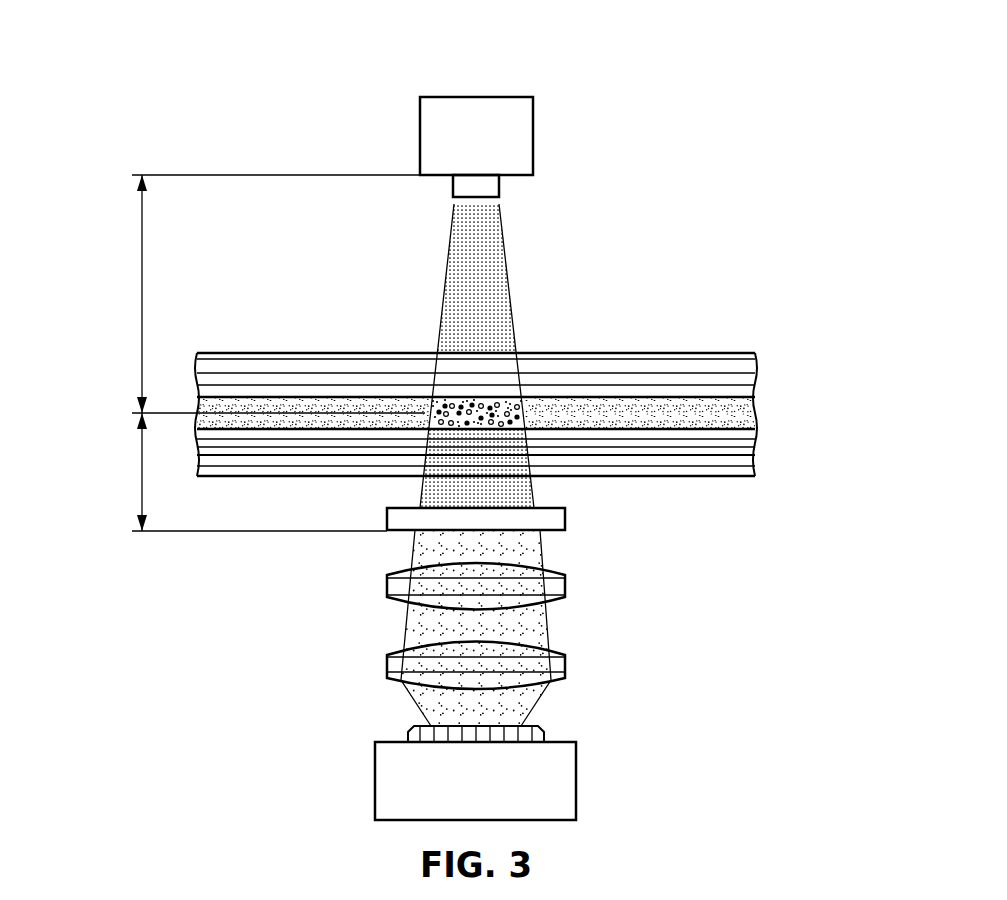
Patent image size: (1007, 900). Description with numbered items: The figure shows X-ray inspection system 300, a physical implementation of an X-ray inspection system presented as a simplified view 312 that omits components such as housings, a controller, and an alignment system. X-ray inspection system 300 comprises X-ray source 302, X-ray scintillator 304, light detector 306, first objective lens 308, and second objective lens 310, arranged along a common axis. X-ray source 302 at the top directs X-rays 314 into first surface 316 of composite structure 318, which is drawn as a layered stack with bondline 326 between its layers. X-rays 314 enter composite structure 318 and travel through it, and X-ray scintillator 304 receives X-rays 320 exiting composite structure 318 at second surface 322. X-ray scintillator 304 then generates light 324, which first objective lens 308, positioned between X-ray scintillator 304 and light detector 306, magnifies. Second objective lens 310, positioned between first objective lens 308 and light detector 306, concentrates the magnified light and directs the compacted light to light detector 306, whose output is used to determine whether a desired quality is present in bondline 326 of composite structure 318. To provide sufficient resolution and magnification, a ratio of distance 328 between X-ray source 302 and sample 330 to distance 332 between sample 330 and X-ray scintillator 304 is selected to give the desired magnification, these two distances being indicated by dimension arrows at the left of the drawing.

The X-ray inspection system 300 is at (268, 70).
The X-ray source 302 is at (533, 137).
The X-ray scintillator 304 is at (567, 519).
The light detector 306 is at (545, 733).
The first objective lens 308 is at (566, 583).
The second objective lens 310 is at (566, 665).
The view 312 is at (686, 144).
The X-rays 314 is at (455, 265).
The first surface 316 is at (687, 352).
The composite structure 318 is at (310, 342).
The X-rays 320 is at (425, 497).
The second surface 322 is at (687, 477).
The light 324 is at (420, 555).
The bondline 326 is at (755, 413).
The distance 328 is at (142, 297).
The sample 330 is at (516, 406).
The distance 332 is at (142, 472).